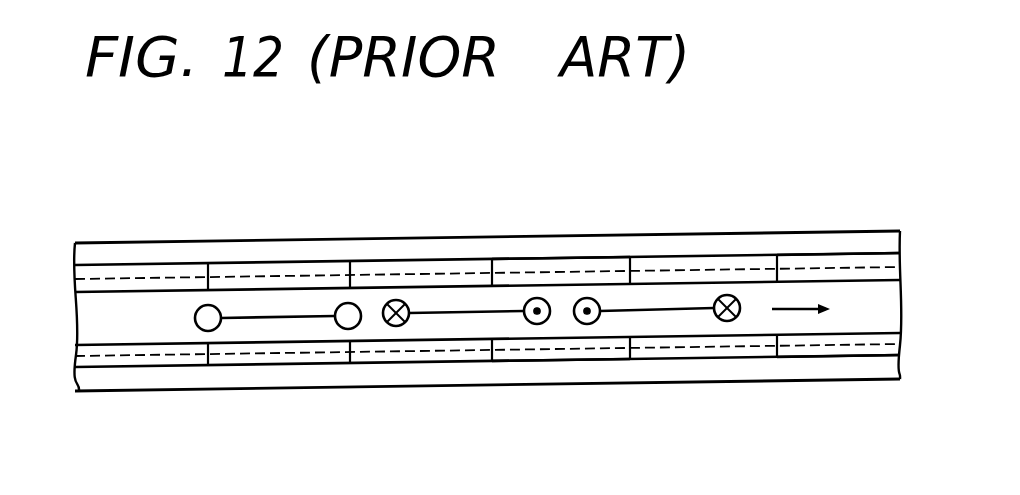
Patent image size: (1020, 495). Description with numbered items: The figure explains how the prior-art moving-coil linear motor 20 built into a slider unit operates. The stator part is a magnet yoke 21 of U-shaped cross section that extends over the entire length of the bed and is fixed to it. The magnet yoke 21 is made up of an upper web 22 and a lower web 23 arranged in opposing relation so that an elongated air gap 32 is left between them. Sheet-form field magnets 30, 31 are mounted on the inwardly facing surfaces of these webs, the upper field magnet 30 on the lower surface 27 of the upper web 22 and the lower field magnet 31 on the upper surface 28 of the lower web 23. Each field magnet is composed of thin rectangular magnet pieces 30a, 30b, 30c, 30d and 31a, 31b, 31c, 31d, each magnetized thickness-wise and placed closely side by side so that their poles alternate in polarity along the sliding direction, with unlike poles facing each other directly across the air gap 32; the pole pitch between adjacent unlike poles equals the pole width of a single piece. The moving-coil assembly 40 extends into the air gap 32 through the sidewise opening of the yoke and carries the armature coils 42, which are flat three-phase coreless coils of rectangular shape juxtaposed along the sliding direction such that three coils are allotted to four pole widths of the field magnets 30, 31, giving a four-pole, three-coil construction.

The moving-coil linear motor 20 is at (553, 220).
The magnet yoke 21 is at (221, 257).
The upper web 22 is at (470, 256).
The lower web 23 is at (488, 372).
The lower surface 27 is at (873, 250).
The upper surface 28 is at (870, 357).
The field magnet 30 is at (612, 258).
The magnet piece 30a is at (300, 265).
The magnet piece 30b is at (400, 258).
The magnet piece 30c is at (527, 262).
The magnet piece 30d is at (720, 262).
The field magnet 31 is at (612, 362).
The magnet piece 31a is at (302, 367).
The magnet piece 31b is at (388, 352).
The magnet piece 31c is at (543, 353).
The magnet piece 31d is at (735, 352).
The air gap 32 is at (373, 300).
The moving-coil assembly 40 is at (745, 303).
The armature coils 42 is at (247, 318).